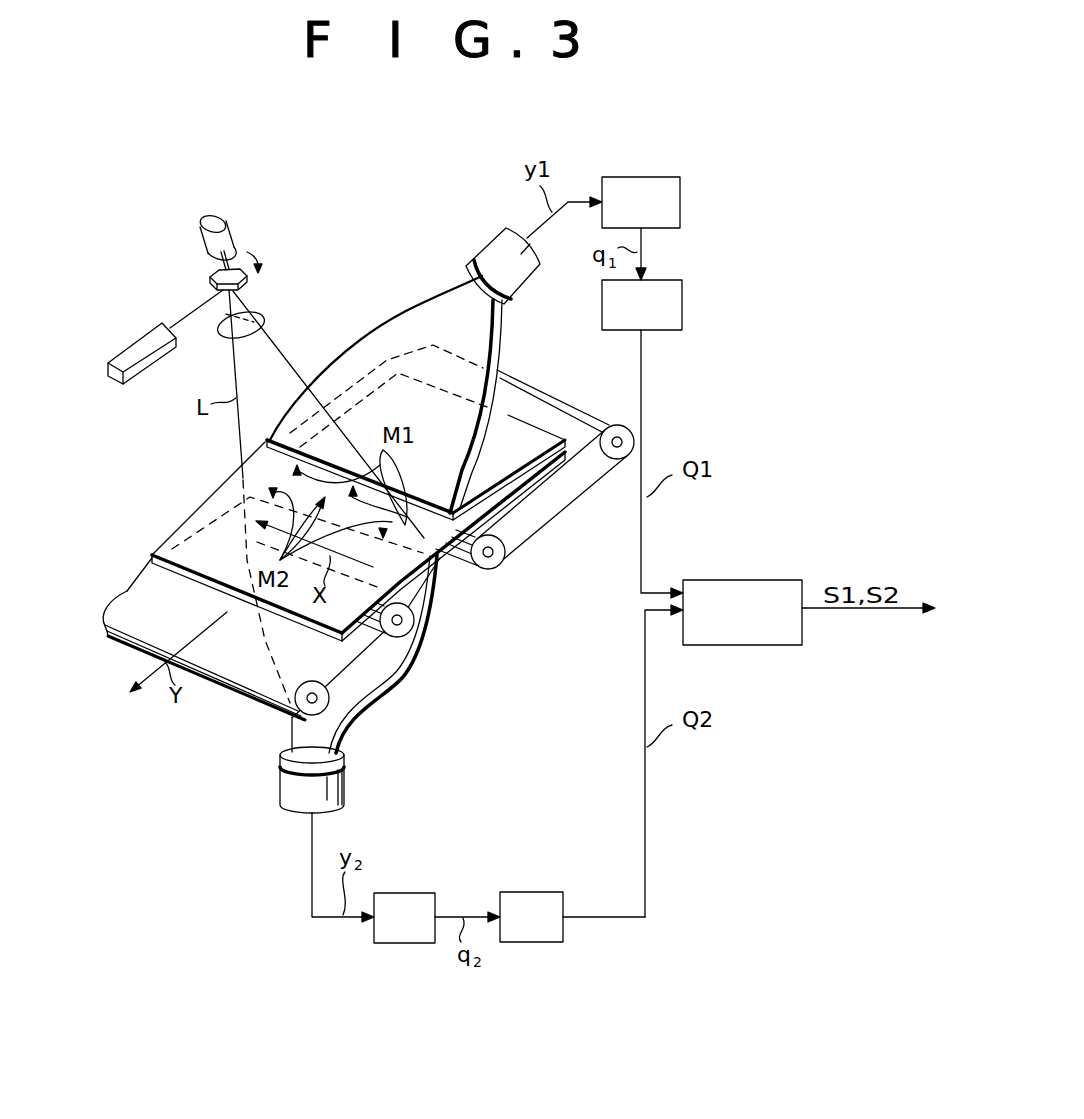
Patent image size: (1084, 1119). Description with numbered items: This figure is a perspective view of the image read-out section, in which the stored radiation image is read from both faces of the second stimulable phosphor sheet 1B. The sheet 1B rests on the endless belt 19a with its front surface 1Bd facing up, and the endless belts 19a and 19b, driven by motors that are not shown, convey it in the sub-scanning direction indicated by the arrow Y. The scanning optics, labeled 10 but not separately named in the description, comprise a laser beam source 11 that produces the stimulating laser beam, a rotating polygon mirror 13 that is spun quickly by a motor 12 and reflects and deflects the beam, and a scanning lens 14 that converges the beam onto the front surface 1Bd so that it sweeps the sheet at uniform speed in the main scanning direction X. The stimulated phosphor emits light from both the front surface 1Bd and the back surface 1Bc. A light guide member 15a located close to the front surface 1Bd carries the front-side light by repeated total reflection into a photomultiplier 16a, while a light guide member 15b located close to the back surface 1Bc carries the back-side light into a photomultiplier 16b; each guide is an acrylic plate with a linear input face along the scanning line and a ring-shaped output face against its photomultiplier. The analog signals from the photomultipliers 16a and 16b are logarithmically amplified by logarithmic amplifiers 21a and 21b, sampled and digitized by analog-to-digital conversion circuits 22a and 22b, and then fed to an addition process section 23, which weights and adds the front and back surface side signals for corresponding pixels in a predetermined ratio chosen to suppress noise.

The light source unit 10 is at (181, 272).
The laser beam source 11 is at (152, 323).
The motor 12 is at (231, 226).
The rotating polygon mirror 13 is at (248, 281).
The scanning lens 14 is at (267, 319).
The light guide member 15a is at (399, 322).
The light guide member 15b is at (433, 632).
The photomultiplier 16a is at (484, 250).
The photomultiplier 16b is at (348, 783).
The endless belt 19a is at (567, 509).
The endless belt 19b is at (126, 592).
The second stimulable phosphor sheet 1B is at (212, 508).
The back surface 1Bc is at (440, 560).
The front surface 1Bd is at (197, 540).
The logarithmic amplifier 21a is at (637, 176).
The logarithmic amplifier 21b is at (402, 892).
The analog-to-digital conversion circuit 22a is at (672, 278).
The analog-to-digital conversion circuit 22b is at (527, 892).
The addition process section 23 is at (700, 580).